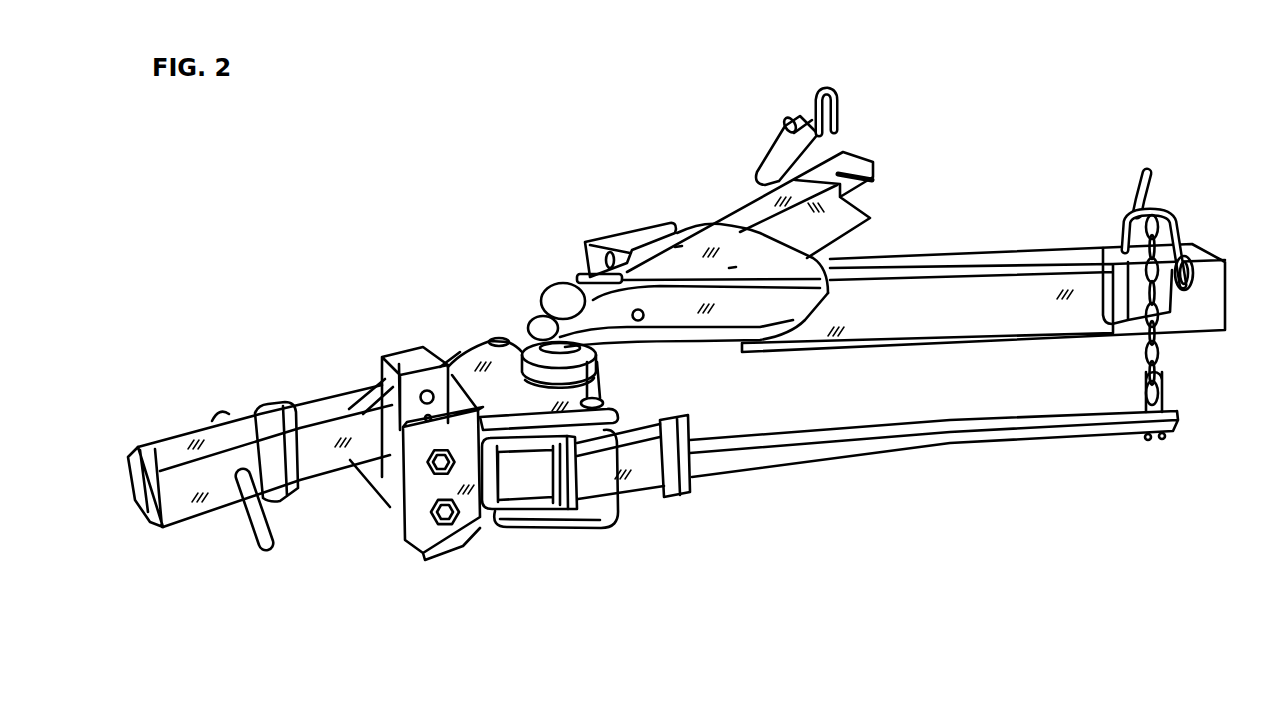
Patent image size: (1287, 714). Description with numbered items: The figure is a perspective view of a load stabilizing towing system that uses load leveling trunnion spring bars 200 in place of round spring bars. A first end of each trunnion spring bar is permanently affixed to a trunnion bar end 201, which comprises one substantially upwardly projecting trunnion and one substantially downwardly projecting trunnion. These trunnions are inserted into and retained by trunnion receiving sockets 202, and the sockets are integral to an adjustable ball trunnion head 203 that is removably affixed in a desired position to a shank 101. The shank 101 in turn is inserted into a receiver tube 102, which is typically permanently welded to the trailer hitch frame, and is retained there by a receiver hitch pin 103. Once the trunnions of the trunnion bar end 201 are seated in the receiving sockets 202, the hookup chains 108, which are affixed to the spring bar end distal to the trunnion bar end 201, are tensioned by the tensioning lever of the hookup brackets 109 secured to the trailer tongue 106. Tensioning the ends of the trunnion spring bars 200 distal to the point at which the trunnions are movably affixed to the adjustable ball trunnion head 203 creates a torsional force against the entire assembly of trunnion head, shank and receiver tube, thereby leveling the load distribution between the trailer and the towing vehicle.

The shank 101 is at (330, 407).
The receiver tube 102 is at (175, 432).
The receiver hitch pin 103 is at (248, 532).
The trailer tongue 106 is at (928, 348).
The hookup chains 108 is at (1165, 378).
The hookup brackets 109 is at (787, 130).
The trunnion spring bars 200 is at (868, 463).
The trunnion bar end 201 is at (640, 497).
The trunnion receiving sockets 202 is at (503, 335).
The adjustable ball trunnion head 203 is at (470, 368).